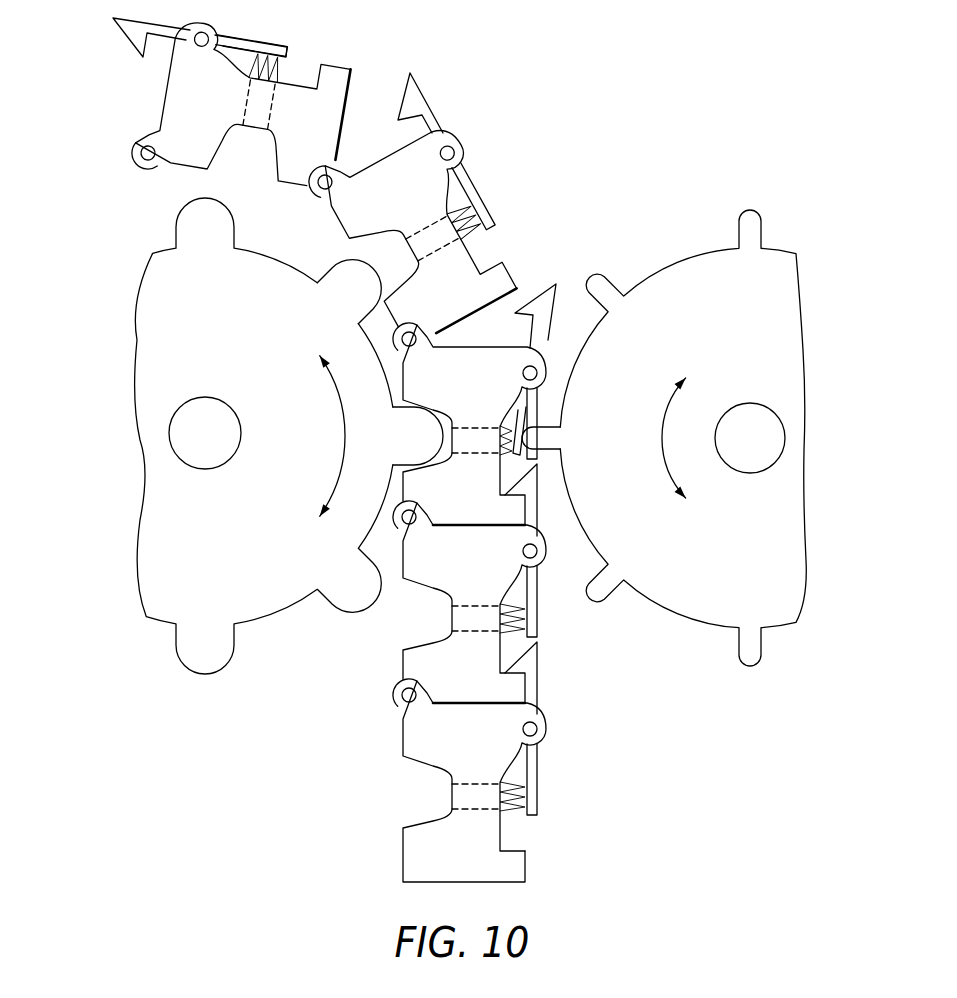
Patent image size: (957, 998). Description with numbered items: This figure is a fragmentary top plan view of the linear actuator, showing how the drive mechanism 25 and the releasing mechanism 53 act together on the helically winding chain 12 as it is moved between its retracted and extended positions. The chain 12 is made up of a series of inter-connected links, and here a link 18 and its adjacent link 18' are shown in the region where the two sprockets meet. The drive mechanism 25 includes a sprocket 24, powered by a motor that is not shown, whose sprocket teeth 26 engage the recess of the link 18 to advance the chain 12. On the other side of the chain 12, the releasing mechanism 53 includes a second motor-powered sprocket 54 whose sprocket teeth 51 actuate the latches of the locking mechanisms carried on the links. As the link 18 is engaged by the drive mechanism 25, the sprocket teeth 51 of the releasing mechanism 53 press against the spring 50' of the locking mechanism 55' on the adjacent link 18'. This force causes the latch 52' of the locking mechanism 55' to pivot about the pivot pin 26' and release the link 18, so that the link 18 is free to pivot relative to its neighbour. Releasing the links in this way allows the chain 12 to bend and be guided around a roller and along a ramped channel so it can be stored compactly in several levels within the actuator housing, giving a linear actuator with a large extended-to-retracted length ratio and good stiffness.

The chain 12 is at (556, 183).
The link 18 is at (419, 212).
The adjacent link 18' is at (517, 376).
The sprocket 24 is at (215, 538).
The drive mechanism 25 is at (110, 380).
The sprocket teeth 26 is at (355, 449).
The pivot pin 26' is at (520, 425).
The spring 50' is at (572, 500).
The sprocket teeth 51 is at (537, 437).
The latch 52' is at (554, 282).
The releasing mechanism 53 is at (803, 231).
The sprocket 54 is at (757, 335).
The locking mechanism 55' is at (584, 347).